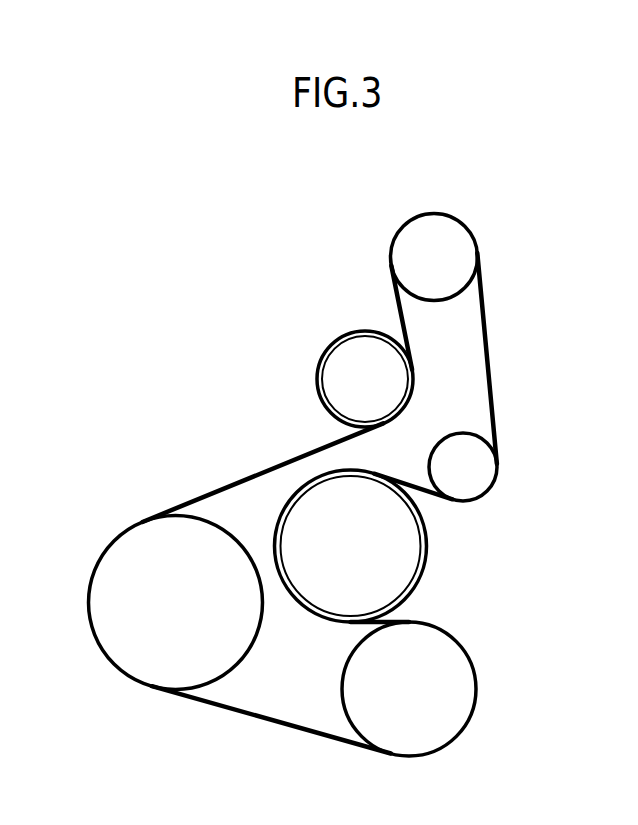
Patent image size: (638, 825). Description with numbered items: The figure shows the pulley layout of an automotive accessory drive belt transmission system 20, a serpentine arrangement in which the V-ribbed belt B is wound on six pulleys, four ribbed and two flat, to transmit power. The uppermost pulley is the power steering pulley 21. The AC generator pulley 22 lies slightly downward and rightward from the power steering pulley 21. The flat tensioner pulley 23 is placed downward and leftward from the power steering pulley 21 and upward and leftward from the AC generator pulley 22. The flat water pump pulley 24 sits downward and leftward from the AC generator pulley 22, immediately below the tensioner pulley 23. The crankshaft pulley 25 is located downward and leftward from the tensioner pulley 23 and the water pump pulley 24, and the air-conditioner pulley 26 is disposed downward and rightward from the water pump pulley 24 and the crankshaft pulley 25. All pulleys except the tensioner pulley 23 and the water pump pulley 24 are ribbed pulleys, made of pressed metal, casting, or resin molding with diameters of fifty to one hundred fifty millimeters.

The accessory drive belt transmission system 20 is at (248, 235).
The V-ribbed belt B is at (270, 468).
The power steering pulley 21 is at (462, 238).
The AC generator pulley 22 is at (478, 482).
The tensioner pulley 23 is at (347, 348).
The water pump pulley 24 is at (412, 548).
The crankshaft pulley 25 is at (133, 665).
The air-conditioner pulley 26 is at (465, 687).